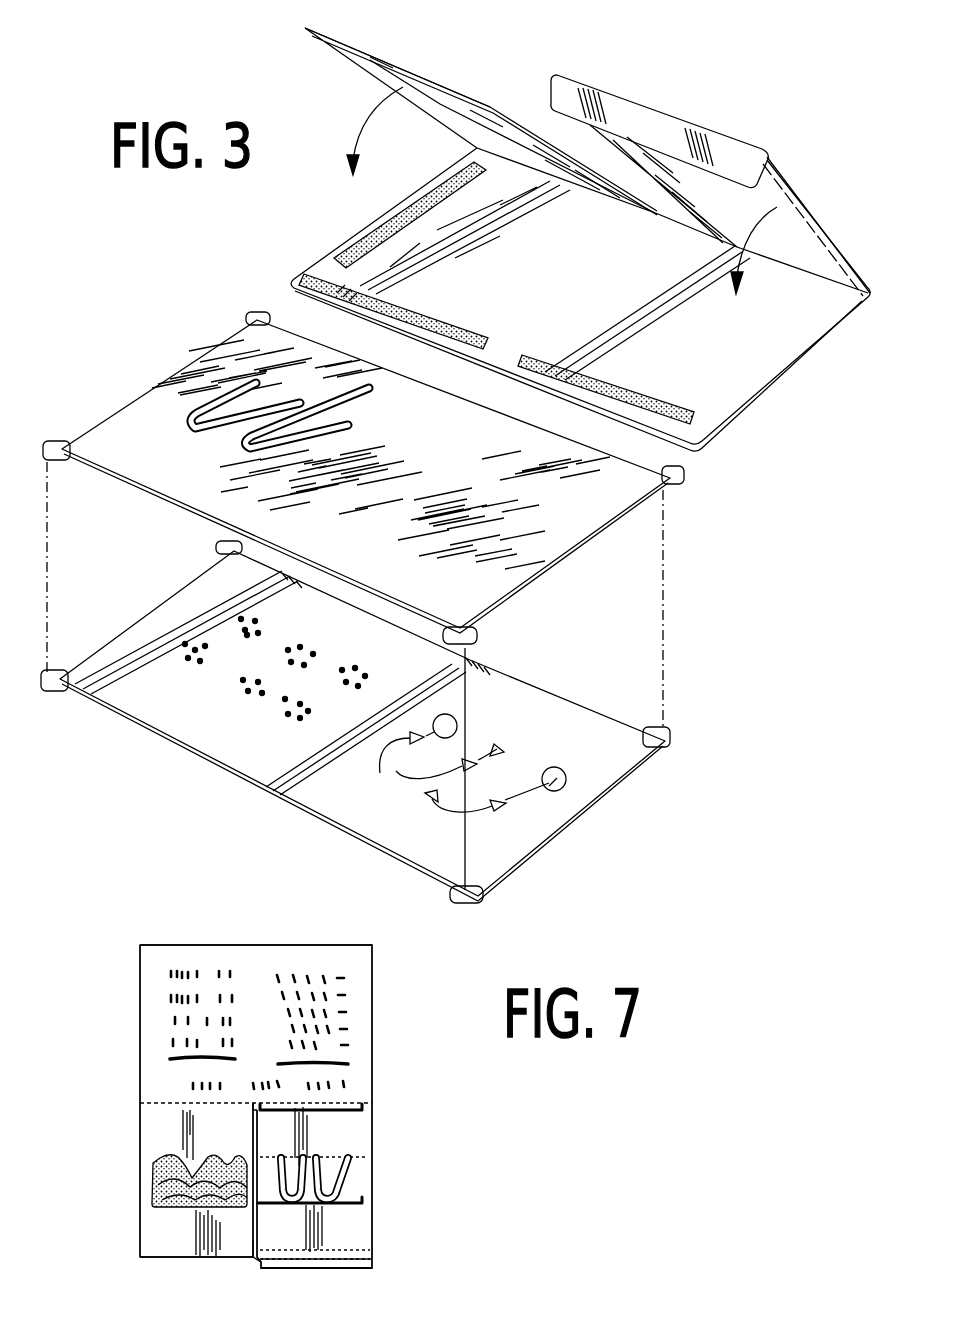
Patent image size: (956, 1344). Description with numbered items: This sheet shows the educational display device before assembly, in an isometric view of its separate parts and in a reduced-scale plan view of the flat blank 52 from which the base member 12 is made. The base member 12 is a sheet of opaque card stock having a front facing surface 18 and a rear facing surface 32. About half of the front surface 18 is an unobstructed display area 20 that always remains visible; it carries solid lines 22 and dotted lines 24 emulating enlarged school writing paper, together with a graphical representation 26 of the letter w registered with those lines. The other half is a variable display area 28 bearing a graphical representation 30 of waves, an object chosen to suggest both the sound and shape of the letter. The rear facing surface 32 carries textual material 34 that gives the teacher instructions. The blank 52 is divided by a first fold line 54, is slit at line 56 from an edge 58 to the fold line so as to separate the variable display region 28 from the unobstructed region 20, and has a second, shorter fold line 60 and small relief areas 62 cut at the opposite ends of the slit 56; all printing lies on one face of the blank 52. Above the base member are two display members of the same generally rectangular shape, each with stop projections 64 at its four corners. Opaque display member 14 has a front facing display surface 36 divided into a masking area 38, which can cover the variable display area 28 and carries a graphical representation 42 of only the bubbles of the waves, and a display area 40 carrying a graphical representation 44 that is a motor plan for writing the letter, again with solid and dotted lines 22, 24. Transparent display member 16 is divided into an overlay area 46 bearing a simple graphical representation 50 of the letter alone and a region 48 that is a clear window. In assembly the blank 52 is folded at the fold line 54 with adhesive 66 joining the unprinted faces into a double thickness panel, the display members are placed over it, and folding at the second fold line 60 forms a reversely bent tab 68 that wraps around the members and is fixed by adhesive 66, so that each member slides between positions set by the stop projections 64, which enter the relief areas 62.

In FIG. 3, the base member 12 is at (754, 394).
In FIG. 7, the base member 12 is at (373, 1037).
In FIG. 3, the display member 14 is at (593, 818).
In FIG. 3, the display member 16 is at (572, 566).
In FIG. 3, the front facing surface 18 is at (438, 88).
In FIG. 7, the front facing surface 18 is at (163, 1143).
In FIG. 3, the unobstructed display area 20 is at (800, 202).
In FIG. 7, the unobstructed display area 20 is at (345, 1130).
In FIG. 7, the solid lines 22 is at (362, 1106).
In FIG. 7, the dotted lines 24 is at (366, 1157).
In FIG. 7, the graphical representation of the letter 26 is at (347, 1182).
In FIG. 7, the variable display area 28 is at (168, 1235).
In FIG. 7, the graphical representation of an object 30 is at (152, 1175).
In FIG. 7, the rear facing surface 32 is at (257, 970).
In FIG. 7, the textual material 34 is at (170, 1018).
In FIG. 3, the front facing display surface 36 is at (259, 758).
In FIG. 3, the masking area 38 is at (194, 702).
In FIG. 3, the display area 40 is at (560, 744).
In FIG. 3, the graphical representation of a portion of the object 42 is at (350, 667).
In FIG. 3, the graphical representation of the letter 44 is at (380, 776).
In FIG. 3, the overlay area 46 is at (194, 464).
In FIG. 3, the transparent window region 48 is at (461, 506).
In FIG. 3, the graphical representation of the letter 50 is at (370, 389).
In FIG. 7, the blank 52 is at (331, 941).
In FIG. 3, the first fold line 54 is at (800, 267).
In FIG. 7, the first fold line 54 is at (143, 1103).
In FIG. 3, the slit 56 is at (533, 123).
In FIG. 7, the slit 56 is at (256, 1232).
In FIG. 3, the edge 58 is at (347, 44).
In FIG. 7, the edge 58 is at (205, 1258).
In FIG. 3, the second fold line 60 is at (720, 136).
In FIG. 7, the second fold line 60 is at (320, 1268).
In FIG. 7, the relief areas 62 is at (257, 1103).
In FIG. 3, the stop projections 64 is at (257, 312).
In FIG. 3, the adhesive 66 is at (427, 208).
In FIG. 3, the reversely bent tab 68 is at (648, 102).
In FIG. 7, the reversely bent tab 68 is at (345, 1270).